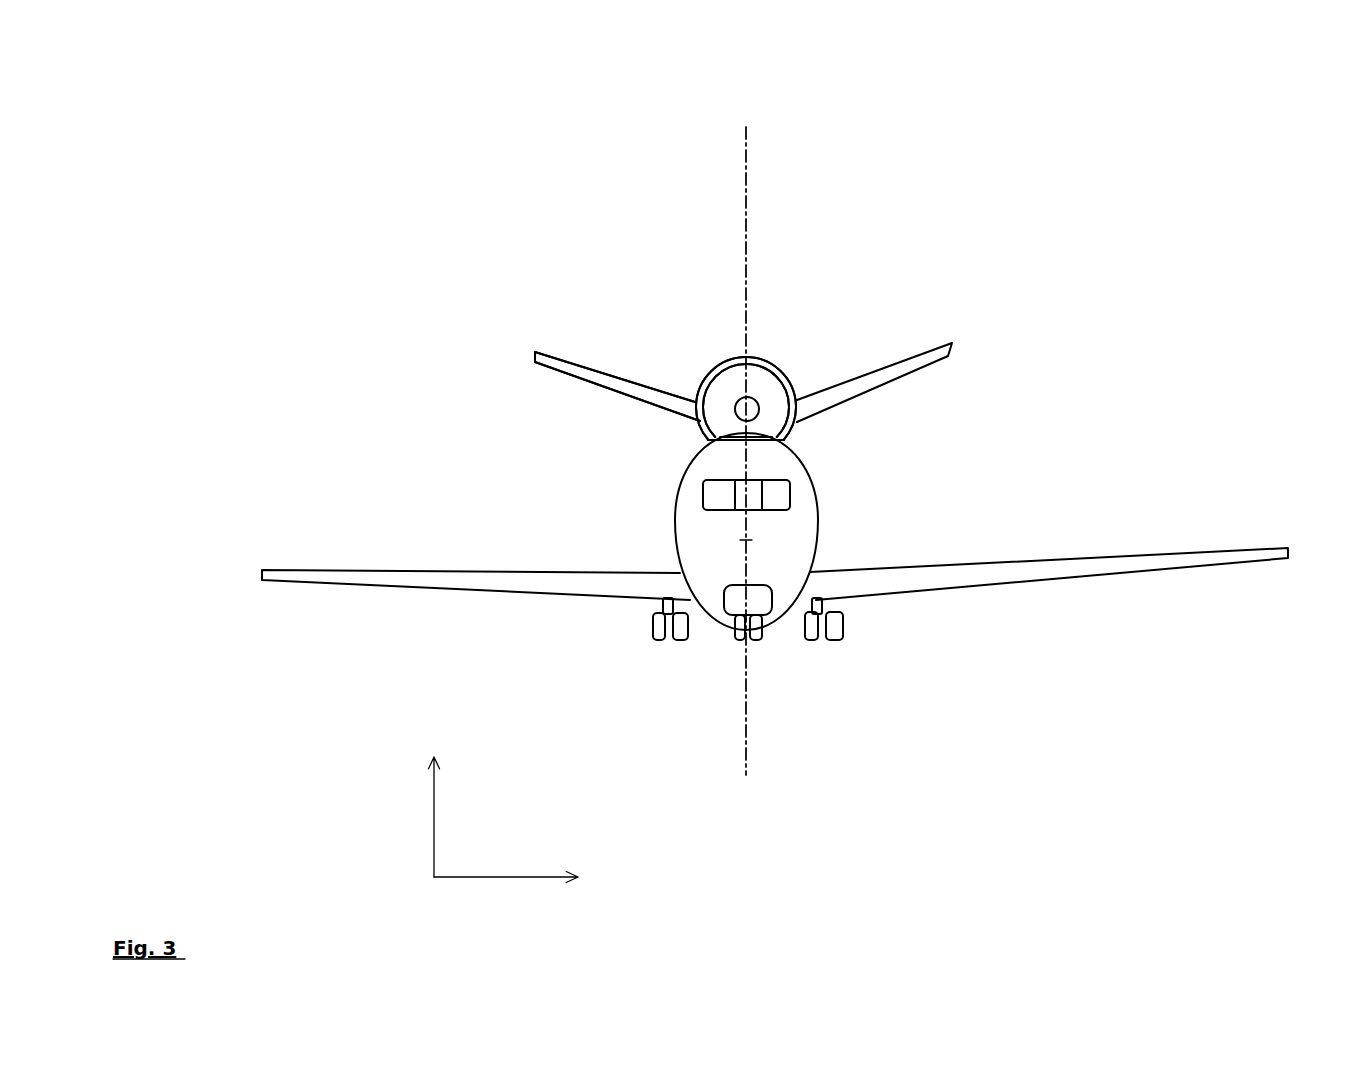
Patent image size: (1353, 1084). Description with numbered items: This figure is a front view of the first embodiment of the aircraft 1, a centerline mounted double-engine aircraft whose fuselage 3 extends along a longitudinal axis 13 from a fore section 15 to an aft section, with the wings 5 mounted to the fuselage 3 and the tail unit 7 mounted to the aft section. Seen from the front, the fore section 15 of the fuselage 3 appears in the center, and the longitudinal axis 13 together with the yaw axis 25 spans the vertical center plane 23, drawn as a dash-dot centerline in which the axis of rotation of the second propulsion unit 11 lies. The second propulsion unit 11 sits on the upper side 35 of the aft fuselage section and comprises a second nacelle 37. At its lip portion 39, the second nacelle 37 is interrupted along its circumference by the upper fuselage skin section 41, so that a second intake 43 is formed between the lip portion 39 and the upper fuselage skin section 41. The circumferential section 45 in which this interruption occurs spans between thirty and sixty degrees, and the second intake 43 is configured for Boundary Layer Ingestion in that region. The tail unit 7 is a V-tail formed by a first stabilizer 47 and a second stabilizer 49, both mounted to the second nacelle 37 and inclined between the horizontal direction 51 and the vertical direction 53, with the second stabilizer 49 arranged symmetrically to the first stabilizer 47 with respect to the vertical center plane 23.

The aircraft 1 is at (295, 192).
The fuselage 3 is at (802, 542).
The wings 5 is at (1097, 567).
The tail unit 7 is at (584, 326).
The second propulsion unit 11 is at (772, 380).
The longitudinal axis 13 is at (747, 540).
The fore section 15 is at (760, 557).
The vertical center plane 23 is at (742, 168).
The yaw axis 25 is at (742, 168).
The upper side 35 is at (702, 324).
The second nacelle 37 is at (787, 395).
The lip portion 39 is at (761, 362).
The upper fuselage skin section 41 is at (736, 443).
The second intake 43 is at (772, 404).
The circumferential section 45 is at (737, 432).
The first stabilizer 47 is at (922, 358).
The second stabilizer 49 is at (597, 380).
The horizontal direction 51 is at (526, 876).
The vertical direction 53 is at (432, 801).